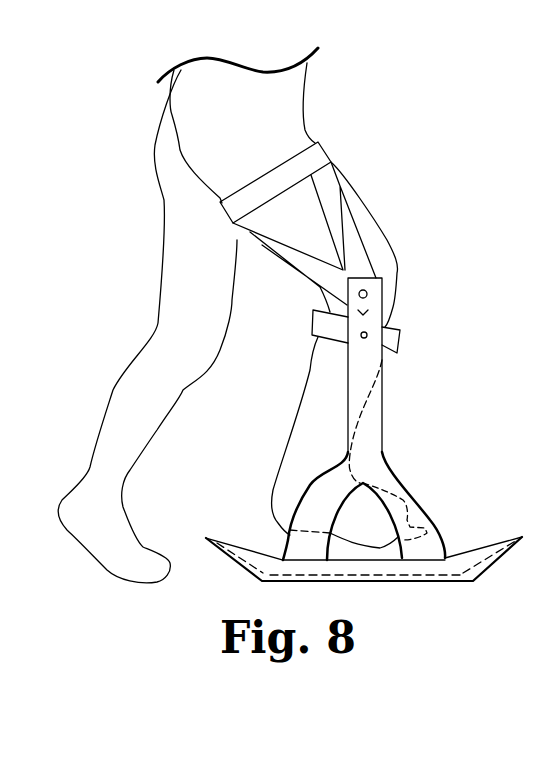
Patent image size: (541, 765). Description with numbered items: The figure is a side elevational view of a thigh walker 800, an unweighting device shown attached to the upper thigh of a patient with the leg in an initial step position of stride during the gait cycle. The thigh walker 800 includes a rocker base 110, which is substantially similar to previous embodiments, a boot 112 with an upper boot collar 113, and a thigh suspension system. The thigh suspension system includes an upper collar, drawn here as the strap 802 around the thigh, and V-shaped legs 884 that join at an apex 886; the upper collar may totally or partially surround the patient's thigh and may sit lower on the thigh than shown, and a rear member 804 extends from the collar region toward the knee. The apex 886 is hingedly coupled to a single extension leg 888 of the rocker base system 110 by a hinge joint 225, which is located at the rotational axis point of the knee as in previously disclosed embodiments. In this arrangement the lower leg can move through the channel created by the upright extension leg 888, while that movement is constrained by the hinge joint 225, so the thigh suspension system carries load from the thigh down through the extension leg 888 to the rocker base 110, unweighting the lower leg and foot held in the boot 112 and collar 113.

The thigh walker 800 is at (385, 198).
The thigh strap 802 is at (330, 141).
The posterior strut 804 is at (267, 238).
The V-shaped legs 884 is at (340, 186).
The apex 886 is at (372, 273).
The hinge joint 225 is at (367, 295).
The single extension leg 888 is at (370, 347).
The rocker base 110 is at (432, 458).
The boot 112 is at (307, 393).
The upper boot collar 113 is at (320, 325).